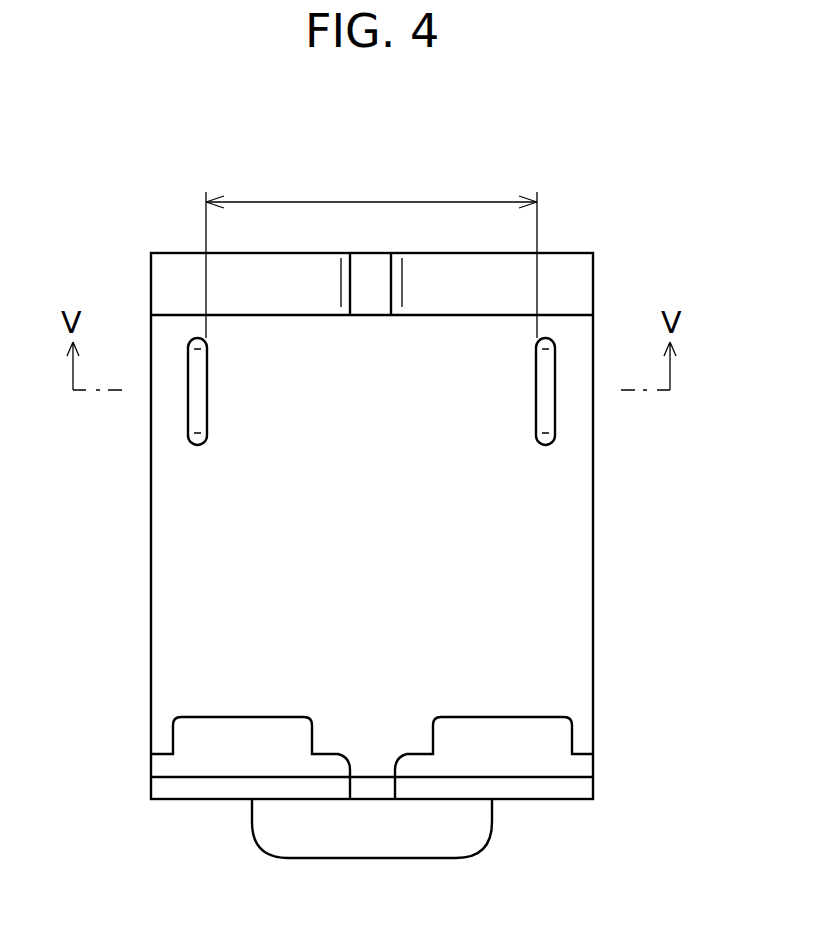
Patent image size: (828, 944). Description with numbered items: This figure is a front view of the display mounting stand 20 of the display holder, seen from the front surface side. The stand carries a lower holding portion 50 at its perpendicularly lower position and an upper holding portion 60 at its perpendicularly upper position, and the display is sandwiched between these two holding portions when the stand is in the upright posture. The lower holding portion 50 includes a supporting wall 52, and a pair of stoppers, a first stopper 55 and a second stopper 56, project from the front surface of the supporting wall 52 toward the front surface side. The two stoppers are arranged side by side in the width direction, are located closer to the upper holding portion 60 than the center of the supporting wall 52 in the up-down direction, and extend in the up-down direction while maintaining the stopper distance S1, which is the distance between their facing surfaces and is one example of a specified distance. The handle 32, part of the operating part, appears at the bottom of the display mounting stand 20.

The display mounting stand 20 is at (610, 220).
The handle 32 is at (371, 860).
The lower holding portion 50 is at (525, 735).
The supporting wall 52 is at (548, 625).
The first stopper 55 is at (188, 410).
The second stopper 56 is at (555, 410).
The upper holding portion 60 is at (440, 262).
The stopper distance S1 is at (368, 200).